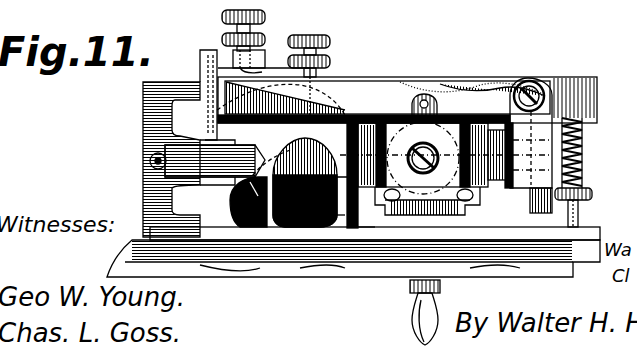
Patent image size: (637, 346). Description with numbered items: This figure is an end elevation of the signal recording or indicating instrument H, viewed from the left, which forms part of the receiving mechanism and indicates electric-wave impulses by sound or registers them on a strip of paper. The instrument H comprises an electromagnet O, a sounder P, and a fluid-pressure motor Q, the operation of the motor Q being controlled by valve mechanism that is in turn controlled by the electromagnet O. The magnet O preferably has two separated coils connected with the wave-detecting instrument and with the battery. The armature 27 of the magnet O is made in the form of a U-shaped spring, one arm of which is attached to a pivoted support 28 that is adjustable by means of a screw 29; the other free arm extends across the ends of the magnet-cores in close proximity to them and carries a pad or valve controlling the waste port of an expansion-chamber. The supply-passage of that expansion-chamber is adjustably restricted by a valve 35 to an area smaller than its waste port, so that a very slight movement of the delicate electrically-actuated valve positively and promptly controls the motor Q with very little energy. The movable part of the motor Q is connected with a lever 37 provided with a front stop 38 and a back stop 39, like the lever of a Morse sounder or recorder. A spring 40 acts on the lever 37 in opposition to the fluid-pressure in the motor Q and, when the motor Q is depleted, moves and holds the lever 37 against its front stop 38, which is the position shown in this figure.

The armature 27 is at (243, 152).
The pivoted support 28 is at (170, 136).
The screw 29 is at (150, 162).
The valve 35 is at (530, 206).
The lever 37 is at (402, 78).
The front stop 38 is at (385, 98).
The back stop 39 is at (250, 70).
The spring 40 is at (581, 163).
The sounder P is at (305, 62).
The fluid-pressure motor Q is at (440, 115).
The electromagnet O is at (425, 175).
The signal recording or indicating instrument H is at (353, 286).